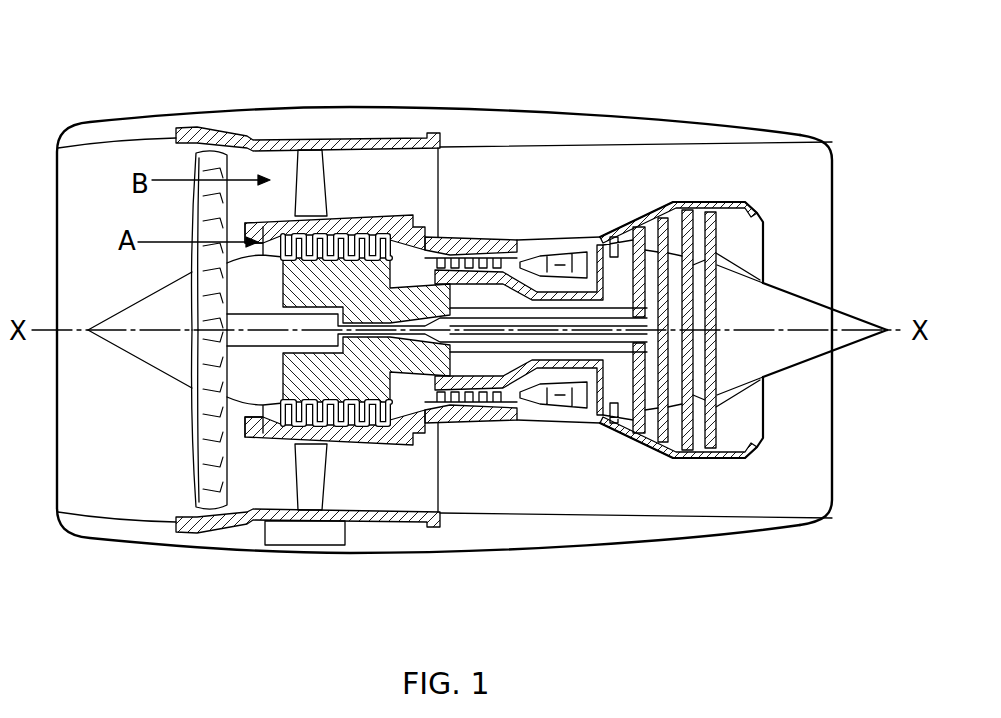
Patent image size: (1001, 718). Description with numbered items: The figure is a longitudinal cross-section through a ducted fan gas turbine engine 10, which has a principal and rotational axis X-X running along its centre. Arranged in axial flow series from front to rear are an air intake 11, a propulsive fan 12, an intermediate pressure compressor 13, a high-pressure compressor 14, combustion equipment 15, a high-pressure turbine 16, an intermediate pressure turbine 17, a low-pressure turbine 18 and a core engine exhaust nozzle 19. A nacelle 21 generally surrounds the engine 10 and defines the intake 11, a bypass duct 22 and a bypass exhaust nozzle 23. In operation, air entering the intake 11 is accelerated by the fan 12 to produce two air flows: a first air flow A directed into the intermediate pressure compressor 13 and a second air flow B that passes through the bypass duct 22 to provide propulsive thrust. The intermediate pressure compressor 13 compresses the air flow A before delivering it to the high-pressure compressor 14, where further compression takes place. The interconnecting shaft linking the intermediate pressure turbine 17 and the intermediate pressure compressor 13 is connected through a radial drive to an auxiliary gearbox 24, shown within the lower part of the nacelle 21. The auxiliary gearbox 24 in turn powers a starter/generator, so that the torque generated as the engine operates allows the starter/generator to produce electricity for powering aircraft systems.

The ducted fan gas turbine engine 10 is at (112, 74).
The air intake 11 is at (113, 142).
The propulsive fan 12 is at (200, 468).
The intermediate pressure compressor 13 is at (350, 420).
The high-pressure compressor 14 is at (487, 257).
The combustion equipment 15 is at (538, 400).
The high-pressure turbine 16 is at (593, 423).
The intermediate pressure turbine 17 is at (642, 240).
The low-pressure turbine 18 is at (663, 432).
The core engine exhaust nozzle 19 is at (753, 203).
The nacelle 21 is at (348, 107).
The bypass duct 22 is at (760, 500).
The bypass exhaust nozzle 23 is at (836, 150).
The auxiliary gearbox 24 is at (305, 547).